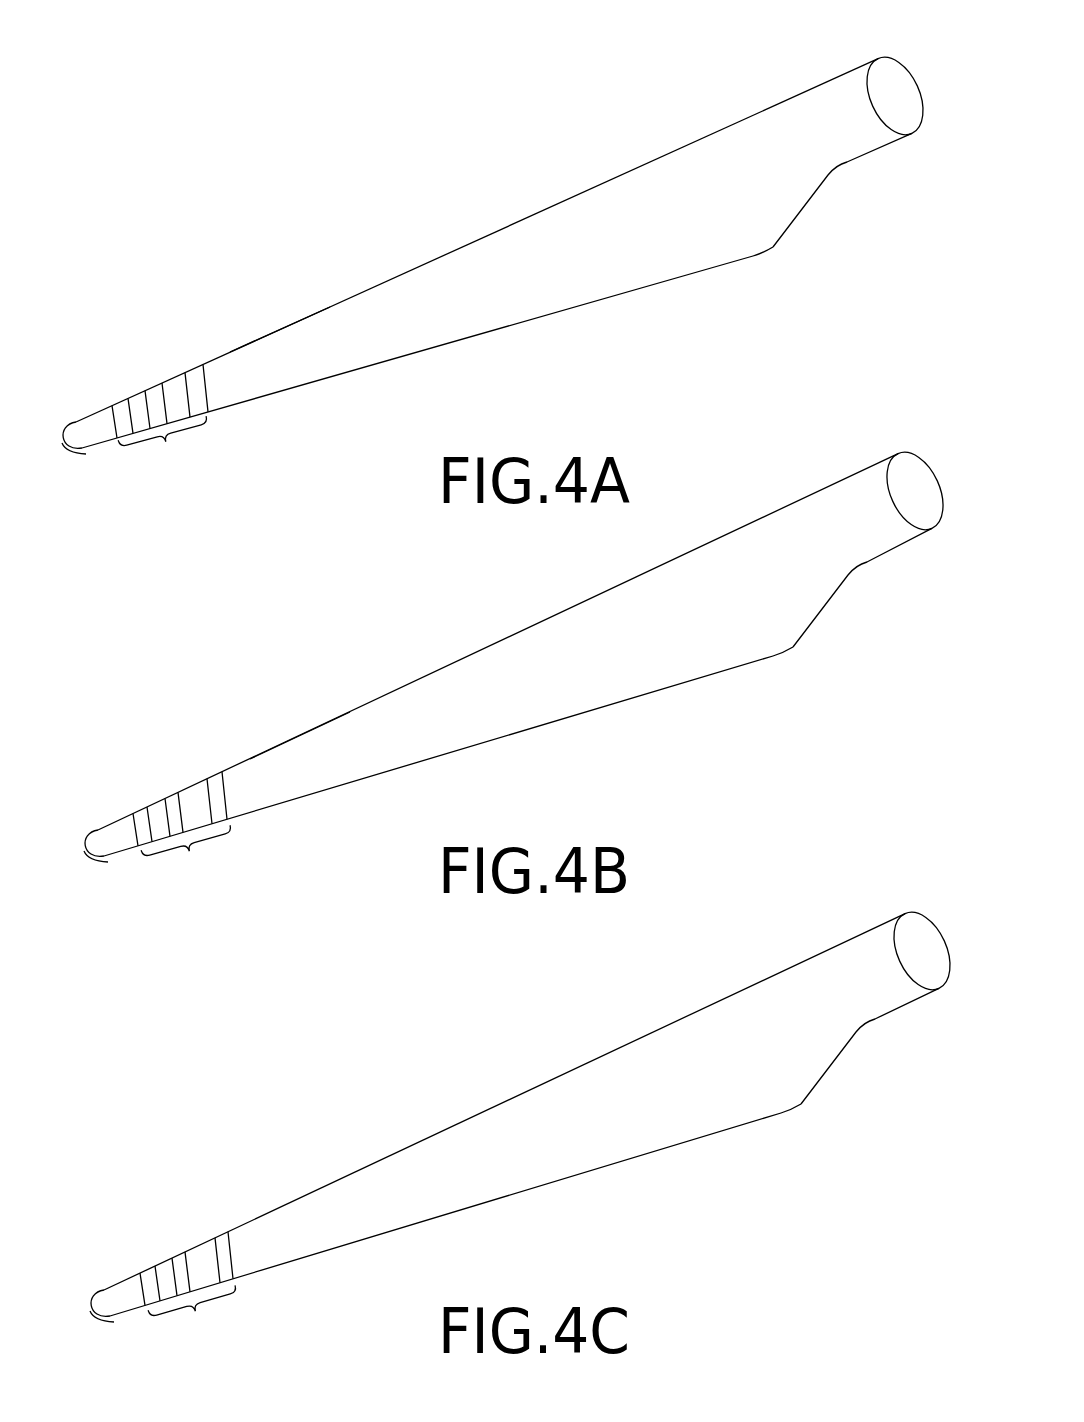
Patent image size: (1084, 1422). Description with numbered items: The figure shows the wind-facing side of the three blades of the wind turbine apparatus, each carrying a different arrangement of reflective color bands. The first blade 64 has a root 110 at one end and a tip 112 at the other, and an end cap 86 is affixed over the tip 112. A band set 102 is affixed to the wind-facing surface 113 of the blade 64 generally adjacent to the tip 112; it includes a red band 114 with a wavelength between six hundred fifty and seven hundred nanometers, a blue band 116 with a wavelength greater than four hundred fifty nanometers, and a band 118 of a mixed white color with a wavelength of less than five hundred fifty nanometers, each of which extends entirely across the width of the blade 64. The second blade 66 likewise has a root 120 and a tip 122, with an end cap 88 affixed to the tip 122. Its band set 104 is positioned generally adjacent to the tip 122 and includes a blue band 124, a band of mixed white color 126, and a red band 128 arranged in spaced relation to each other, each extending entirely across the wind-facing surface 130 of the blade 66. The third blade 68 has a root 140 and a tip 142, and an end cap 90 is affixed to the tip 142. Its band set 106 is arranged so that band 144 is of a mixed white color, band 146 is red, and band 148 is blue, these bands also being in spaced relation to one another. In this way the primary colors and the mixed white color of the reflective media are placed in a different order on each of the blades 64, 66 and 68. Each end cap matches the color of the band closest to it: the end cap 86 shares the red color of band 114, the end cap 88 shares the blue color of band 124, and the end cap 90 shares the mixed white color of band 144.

In FIG. 4A, the root 110 is at (820, 82).
In FIG. 4A, the blade 64 is at (478, 253).
In FIG. 4A, the wind-facing surface 113 is at (280, 343).
In FIG. 4A, the tip 112 is at (80, 437).
In FIG. 4A, the end cap 86 is at (68, 457).
In FIG. 4A, the band 114 is at (120, 415).
In FIG. 4A, the band 116 is at (148, 400).
In FIG. 4A, the band 118 is at (188, 383).
In FIG. 4A, the band set 102 is at (164, 451).
In FIG. 4B, the root 120 is at (842, 482).
In FIG. 4B, the blade 66 is at (500, 652).
In FIG. 4B, the wind-facing surface 130 is at (300, 745).
In FIG. 4B, the tip 122 is at (105, 837).
In FIG. 4B, the end cap 88 is at (92, 860).
In FIG. 4B, the blue band 124 is at (140, 818).
In FIG. 4B, the band of mixed white color 126 is at (172, 797).
In FIG. 4B, the red band 128 is at (213, 785).
In FIG. 4B, the band set 104 is at (187, 860).
In FIG. 4C, the root 140 is at (848, 940).
In FIG. 4C, the blade 68 is at (507, 1113).
In FIG. 4C, the tip 142 is at (110, 1298).
In FIG. 4C, the end cap 90 is at (98, 1320).
In FIG. 4C, the band 144 is at (148, 1278).
In FIG. 4C, the band 146 is at (177, 1258).
In FIG. 4C, the band 148 is at (220, 1247).
In FIG. 4C, the band set 106 is at (193, 1319).